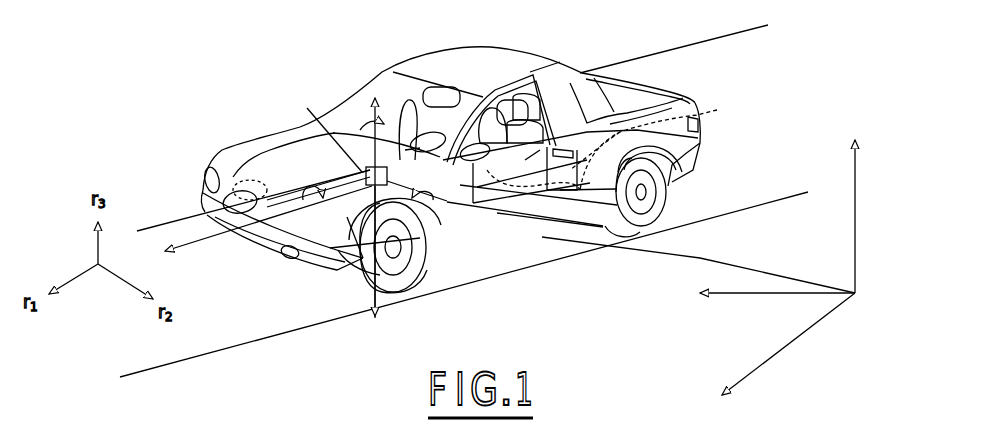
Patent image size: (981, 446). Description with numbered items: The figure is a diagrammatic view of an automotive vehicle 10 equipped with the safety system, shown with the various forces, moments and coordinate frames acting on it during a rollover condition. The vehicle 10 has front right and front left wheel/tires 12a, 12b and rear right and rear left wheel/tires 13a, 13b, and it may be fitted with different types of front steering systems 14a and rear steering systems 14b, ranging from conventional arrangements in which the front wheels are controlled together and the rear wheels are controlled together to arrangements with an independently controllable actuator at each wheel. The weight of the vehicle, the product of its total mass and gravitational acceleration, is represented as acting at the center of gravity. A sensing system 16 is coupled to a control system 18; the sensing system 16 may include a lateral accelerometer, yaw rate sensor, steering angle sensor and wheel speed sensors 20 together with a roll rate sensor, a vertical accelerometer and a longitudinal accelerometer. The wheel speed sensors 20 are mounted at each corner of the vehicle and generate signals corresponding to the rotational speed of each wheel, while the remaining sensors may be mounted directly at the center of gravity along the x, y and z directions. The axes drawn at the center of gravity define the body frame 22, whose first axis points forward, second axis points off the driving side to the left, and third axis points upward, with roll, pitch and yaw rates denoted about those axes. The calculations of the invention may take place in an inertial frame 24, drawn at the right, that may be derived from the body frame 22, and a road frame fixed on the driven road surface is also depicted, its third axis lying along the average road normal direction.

The automotive vehicle 10 is at (472, 50).
The front right wheel/tire 12a is at (312, 203).
The front left wheel/tire 12b is at (410, 285).
The rear right wheel/tire 13a is at (540, 57).
The rear left tire 13b is at (672, 190).
The front steering system 14a is at (338, 250).
The rear steering system 14b is at (625, 143).
The sensing system 16 is at (415, 160).
The control system 18 is at (530, 155).
The wheel speed sensors 20 is at (430, 252).
The body frame 22 is at (183, 246).
The inertial frame 24 is at (857, 297).